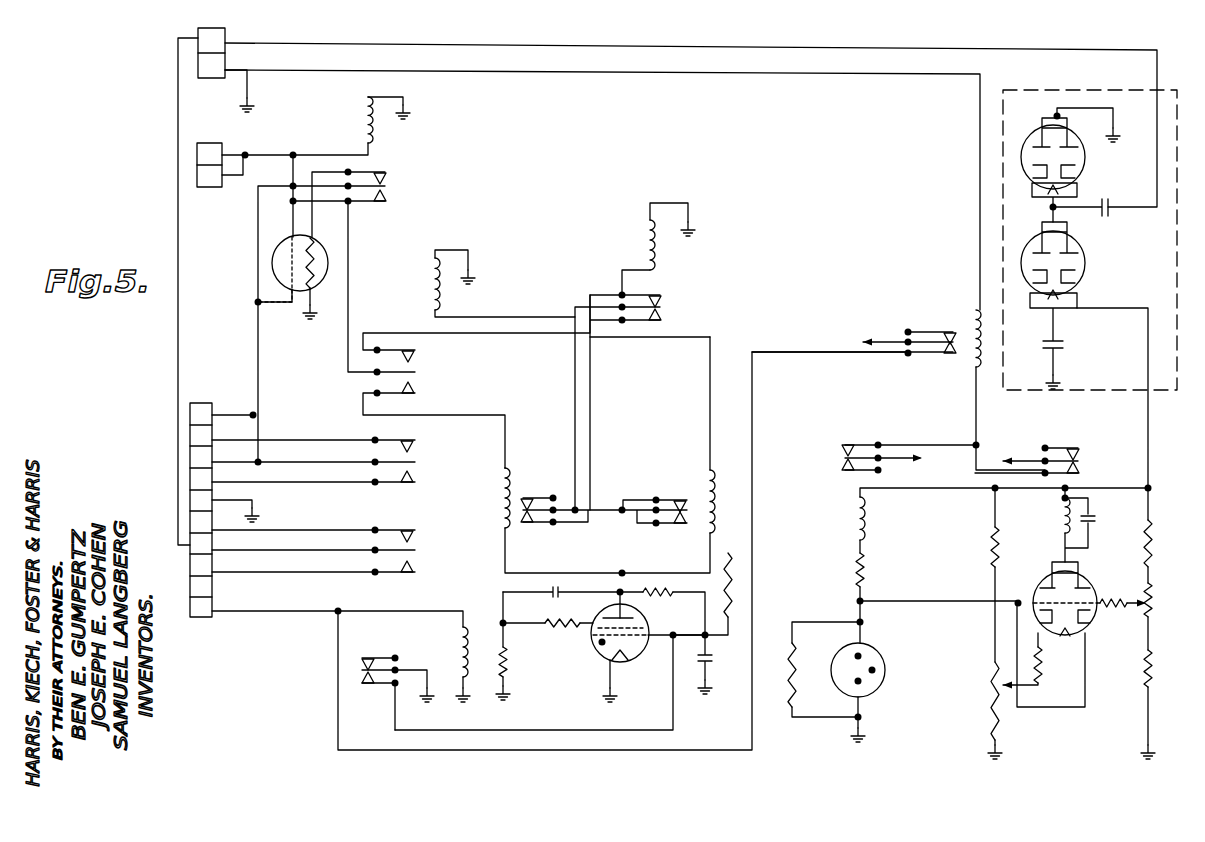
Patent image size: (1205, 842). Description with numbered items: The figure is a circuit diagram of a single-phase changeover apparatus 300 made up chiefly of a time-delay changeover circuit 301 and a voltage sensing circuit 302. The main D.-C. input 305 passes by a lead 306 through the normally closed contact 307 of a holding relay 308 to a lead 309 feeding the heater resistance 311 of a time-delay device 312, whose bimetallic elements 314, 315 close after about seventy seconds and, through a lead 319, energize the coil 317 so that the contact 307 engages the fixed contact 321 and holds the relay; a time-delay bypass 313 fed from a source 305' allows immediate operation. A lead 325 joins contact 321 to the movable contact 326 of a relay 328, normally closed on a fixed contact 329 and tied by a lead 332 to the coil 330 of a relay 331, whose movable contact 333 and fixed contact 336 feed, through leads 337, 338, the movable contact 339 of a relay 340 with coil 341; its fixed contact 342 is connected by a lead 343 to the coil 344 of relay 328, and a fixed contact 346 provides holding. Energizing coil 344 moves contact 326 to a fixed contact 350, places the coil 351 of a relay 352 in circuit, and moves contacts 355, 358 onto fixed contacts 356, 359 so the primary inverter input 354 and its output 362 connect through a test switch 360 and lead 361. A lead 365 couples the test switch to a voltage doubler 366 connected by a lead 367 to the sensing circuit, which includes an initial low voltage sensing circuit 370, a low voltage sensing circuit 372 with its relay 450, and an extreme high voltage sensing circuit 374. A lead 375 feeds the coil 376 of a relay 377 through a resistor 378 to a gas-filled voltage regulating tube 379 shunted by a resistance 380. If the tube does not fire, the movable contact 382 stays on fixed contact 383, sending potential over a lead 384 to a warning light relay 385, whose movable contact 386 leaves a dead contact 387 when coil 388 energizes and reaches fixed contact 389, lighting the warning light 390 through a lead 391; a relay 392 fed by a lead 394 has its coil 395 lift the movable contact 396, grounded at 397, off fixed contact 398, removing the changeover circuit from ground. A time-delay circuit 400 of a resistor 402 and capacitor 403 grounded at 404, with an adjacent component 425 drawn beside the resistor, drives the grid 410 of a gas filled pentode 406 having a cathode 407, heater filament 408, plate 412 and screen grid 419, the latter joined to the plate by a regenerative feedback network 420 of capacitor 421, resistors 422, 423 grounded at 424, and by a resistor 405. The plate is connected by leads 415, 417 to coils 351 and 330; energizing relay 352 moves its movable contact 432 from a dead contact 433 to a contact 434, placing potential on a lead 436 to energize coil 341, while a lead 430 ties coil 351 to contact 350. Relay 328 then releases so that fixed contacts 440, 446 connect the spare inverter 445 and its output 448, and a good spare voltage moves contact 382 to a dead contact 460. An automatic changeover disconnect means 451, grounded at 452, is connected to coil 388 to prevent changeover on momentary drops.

The single-phase changeover apparatus 300 is at (758, 206).
The time-delay changeover circuit 301 is at (606, 470).
The voltage sensing circuit 302 is at (934, 754).
The main D.-C. input 305 is at (272, 510).
The source of D.-C. potential 305' is at (166, 185).
The lead 306 is at (248, 334).
The normally closed contact 307 is at (387, 180).
The holding relay 308 is at (400, 141).
The lead 309 is at (330, 150).
The heater resistance 311 is at (318, 272).
The time-delay device 312 is at (330, 250).
The time-delay bypass 313 is at (197, 155).
The bimetallic element 314 is at (290, 252).
The bimetallic element 315 is at (290, 270).
The coil 317 is at (364, 110).
The lead 319 is at (258, 213).
The fixed contact 321 is at (387, 199).
The lead 325 is at (348, 357).
The movable contact 326 is at (416, 371).
The relay 328 is at (418, 318).
The fixed contact 329 is at (416, 352).
The coil 330 is at (705, 480).
The relay 331 is at (728, 468).
The lead 332 is at (505, 338).
The movable contact 333 is at (637, 526).
The fixed contact 336 is at (678, 499).
The lead 337 is at (612, 513).
The lead 338 is at (575, 434).
The movable contact 339 is at (662, 300).
The relay 340 is at (641, 206).
The coil 341 is at (647, 241).
The fixed contact 342 is at (662, 318).
The lead 343 is at (489, 310).
The coil 344 is at (435, 258).
The fixed contact 346 is at (662, 295).
The fixed contact 350 is at (416, 393).
The coil 351 is at (500, 492).
The relay 352 is at (500, 488).
The input of the primary inverter 354 is at (188, 470).
The movable contact 355 is at (416, 458).
The fixed contact 356 is at (416, 484).
The movable contact 358 is at (416, 548).
The fixed contact 359 is at (416, 574).
The test switch 360 is at (198, 38).
The lead 361 is at (178, 108).
The A.-C. output of the primary inverter 362 is at (216, 577).
The lead 365 is at (340, 45).
The voltage doubler 366 is at (1102, 392).
The lead 367 is at (1148, 432).
The initial low voltage sensing circuit 370 is at (820, 744).
The low voltage sensing circuit 372 is at (1034, 578).
The extreme high voltage sensing circuit 374 is at (1102, 578).
The lead 375 is at (913, 490).
The coil 376 is at (870, 524).
The relay 377 is at (850, 533).
The resistor 378 is at (866, 572).
The gas-filled voltage regulating tube 379 is at (885, 684).
The resistance 380 is at (796, 680).
The movable contact 382 is at (844, 458).
The fixed contact 383 is at (853, 436).
The lead 384 is at (976, 426).
The warning light relay 385 is at (964, 382).
The movable contact 386 is at (917, 352).
The dead fixed contact 387 is at (948, 334).
The coil 388 is at (972, 311).
The fixed contact 389 is at (950, 356).
The warning light 390 is at (212, 617).
The lead 391 is at (338, 685).
The relay 392 is at (495, 634).
The lead 394 is at (316, 621).
The coil 395 is at (459, 653).
The movable contact 396 is at (386, 660).
The ground 397 is at (426, 698).
The fixed contact 398 is at (372, 685).
The time-delay circuit 400 is at (754, 643).
The resistor 402 is at (743, 590).
The capacitor 403 is at (707, 668).
The ground 404 is at (716, 708).
The resistor 405 is at (666, 591).
The gas filled pentode 406 is at (598, 658).
The cathode 407 is at (630, 662).
The heater filament 408 is at (624, 678).
The grid 410 is at (595, 630).
The plate 412 is at (640, 618).
The lead 415 is at (572, 576).
The lead 417 is at (634, 574).
The screen grid 419 is at (603, 618).
The regenerative feedback network 420 is at (524, 644).
The capacitor 421 is at (553, 590).
The resistor 422 is at (552, 617).
The resistor 423 is at (508, 686).
The ground 424 is at (504, 698).
The resistor 425 is at (728, 558).
The lead 430 is at (484, 408).
The movable contact 432 is at (502, 518).
The dead contact 433 is at (533, 486).
The contact 434 is at (527, 523).
The lead 436 is at (590, 384).
The fixed contact 440 is at (424, 442).
The spare inverter 445 is at (188, 424).
The fixed contact 446 is at (422, 528).
The A.-C. output of the spare inverter 448 is at (216, 535).
The relay 450 is at (1098, 522).
The automatic changeover disconnect means 451 is at (210, 65).
The ground 452 is at (247, 106).
The dead contact 460 is at (846, 473).